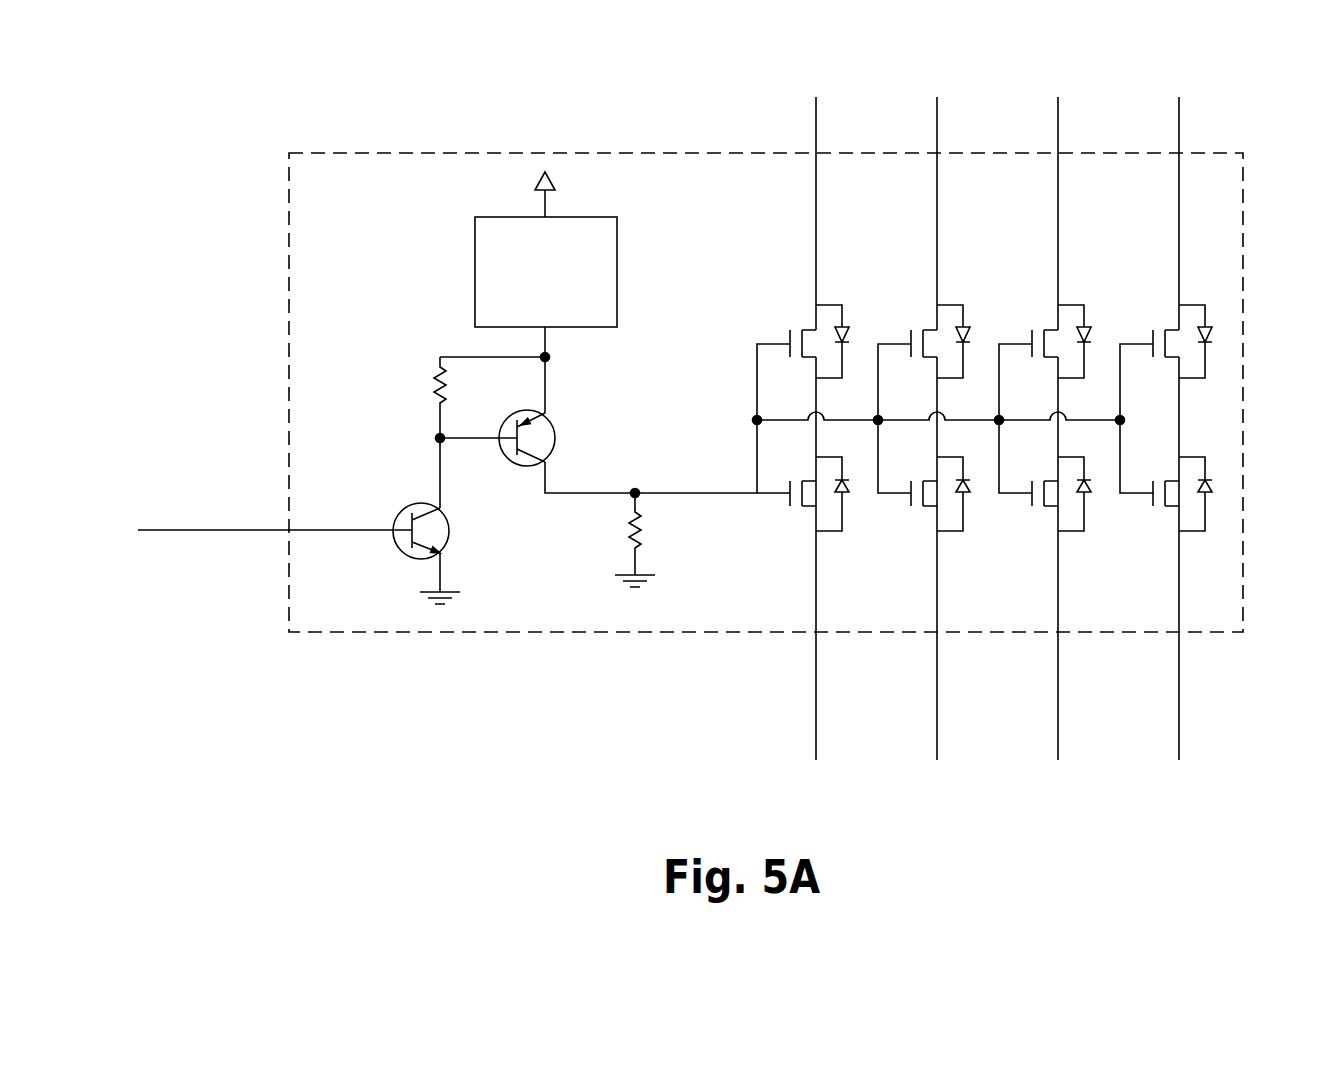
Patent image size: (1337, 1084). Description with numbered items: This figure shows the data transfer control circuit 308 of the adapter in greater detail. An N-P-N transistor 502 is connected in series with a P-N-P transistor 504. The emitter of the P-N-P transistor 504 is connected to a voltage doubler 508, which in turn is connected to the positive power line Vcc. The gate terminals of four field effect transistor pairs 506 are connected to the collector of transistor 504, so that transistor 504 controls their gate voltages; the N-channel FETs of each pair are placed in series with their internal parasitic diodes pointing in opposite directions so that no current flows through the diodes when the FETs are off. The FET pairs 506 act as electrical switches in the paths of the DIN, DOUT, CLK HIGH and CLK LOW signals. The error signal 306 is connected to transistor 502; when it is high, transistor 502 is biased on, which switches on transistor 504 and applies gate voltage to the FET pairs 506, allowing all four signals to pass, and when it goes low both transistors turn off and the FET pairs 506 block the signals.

The error signal 306 is at (275, 512).
The data transfer control circuit 308 is at (1243, 242).
The N-P-N transistor 502 is at (443, 514).
The P-N-P transistor 504 is at (548, 421).
The field effect transistor pairs 506 is at (765, 526).
The voltage doubler 508 is at (617, 241).